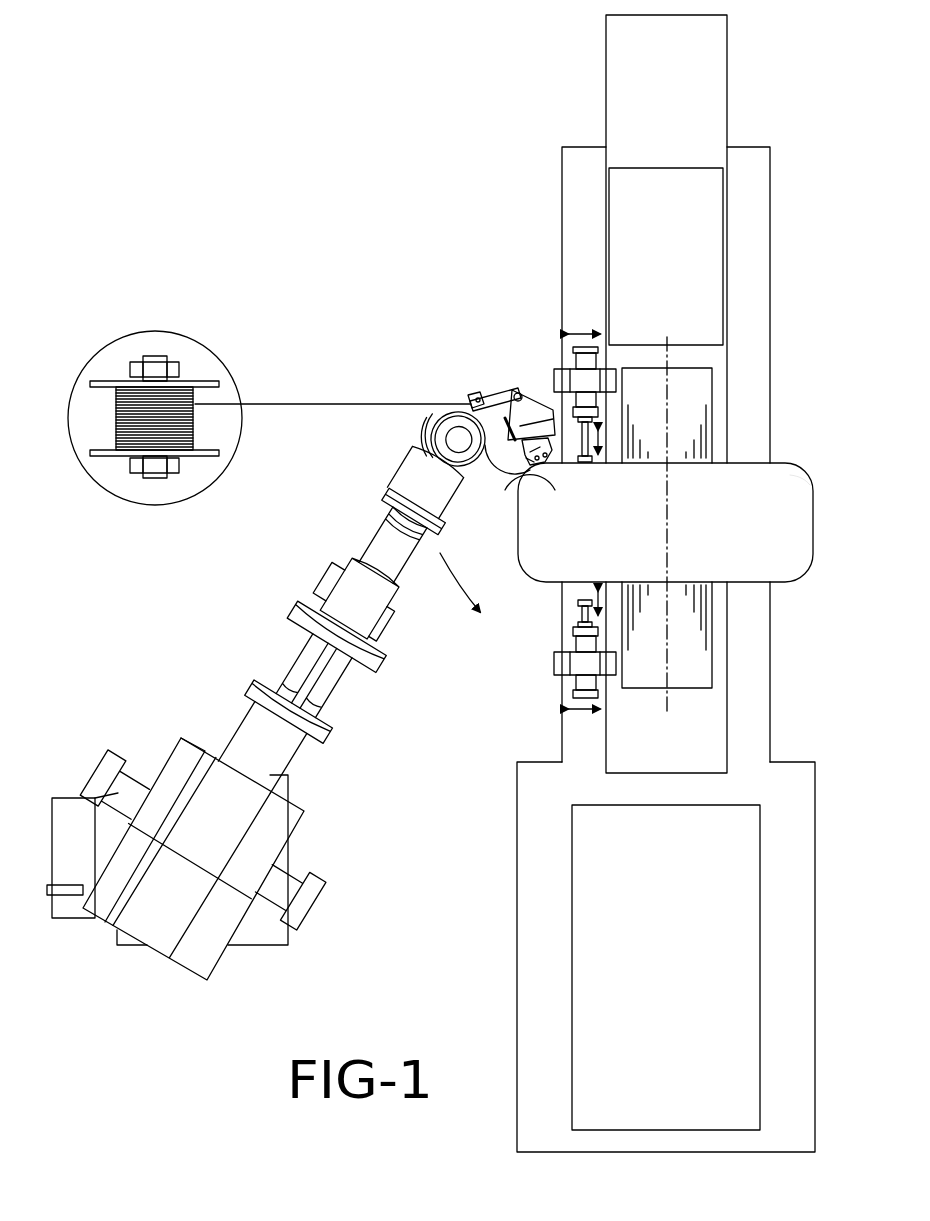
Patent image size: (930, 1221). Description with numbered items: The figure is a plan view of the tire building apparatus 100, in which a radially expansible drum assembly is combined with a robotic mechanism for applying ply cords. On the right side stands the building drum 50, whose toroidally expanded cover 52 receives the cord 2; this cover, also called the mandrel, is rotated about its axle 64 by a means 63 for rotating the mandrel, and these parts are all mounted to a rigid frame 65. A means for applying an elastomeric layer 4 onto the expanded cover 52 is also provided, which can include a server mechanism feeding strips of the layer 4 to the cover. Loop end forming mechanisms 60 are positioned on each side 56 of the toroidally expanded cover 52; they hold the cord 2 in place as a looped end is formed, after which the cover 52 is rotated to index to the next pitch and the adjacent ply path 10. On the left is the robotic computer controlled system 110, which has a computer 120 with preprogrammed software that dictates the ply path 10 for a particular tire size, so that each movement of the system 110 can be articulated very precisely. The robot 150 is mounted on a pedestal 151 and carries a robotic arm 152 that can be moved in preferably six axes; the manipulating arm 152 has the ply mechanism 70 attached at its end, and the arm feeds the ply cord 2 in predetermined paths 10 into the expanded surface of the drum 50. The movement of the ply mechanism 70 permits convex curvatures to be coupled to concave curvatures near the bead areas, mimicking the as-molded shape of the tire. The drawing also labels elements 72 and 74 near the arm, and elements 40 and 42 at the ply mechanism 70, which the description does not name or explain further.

The tire building apparatus 100 is at (422, 320).
The wire spool 74 is at (110, 383).
The wire guide bracket 72 is at (480, 402).
The ply cord 2 is at (507, 400).
The ply mechanism 70 is at (488, 424).
The side of the toroidally expanded cover 56 is at (742, 463).
The expanded cover 52 is at (790, 475).
The ply path 10 is at (538, 463).
The loop end forming mechanism 60 is at (582, 598).
The wire cutter 42 is at (505, 452).
The wire nozzle 40 is at (518, 456).
The robotic arm 152 is at (382, 540).
The elastomeric layer 4 is at (524, 584).
The building drum 50 is at (778, 548).
The axle 64 is at (655, 665).
The robotic computer controlled system 110 is at (281, 696).
The means for rotating the mandrel 63 is at (615, 862).
The rigid frame 65 is at (548, 985).
The computer 120 is at (75, 825).
The robot 150 is at (188, 960).
The pedestal 151 is at (257, 935).